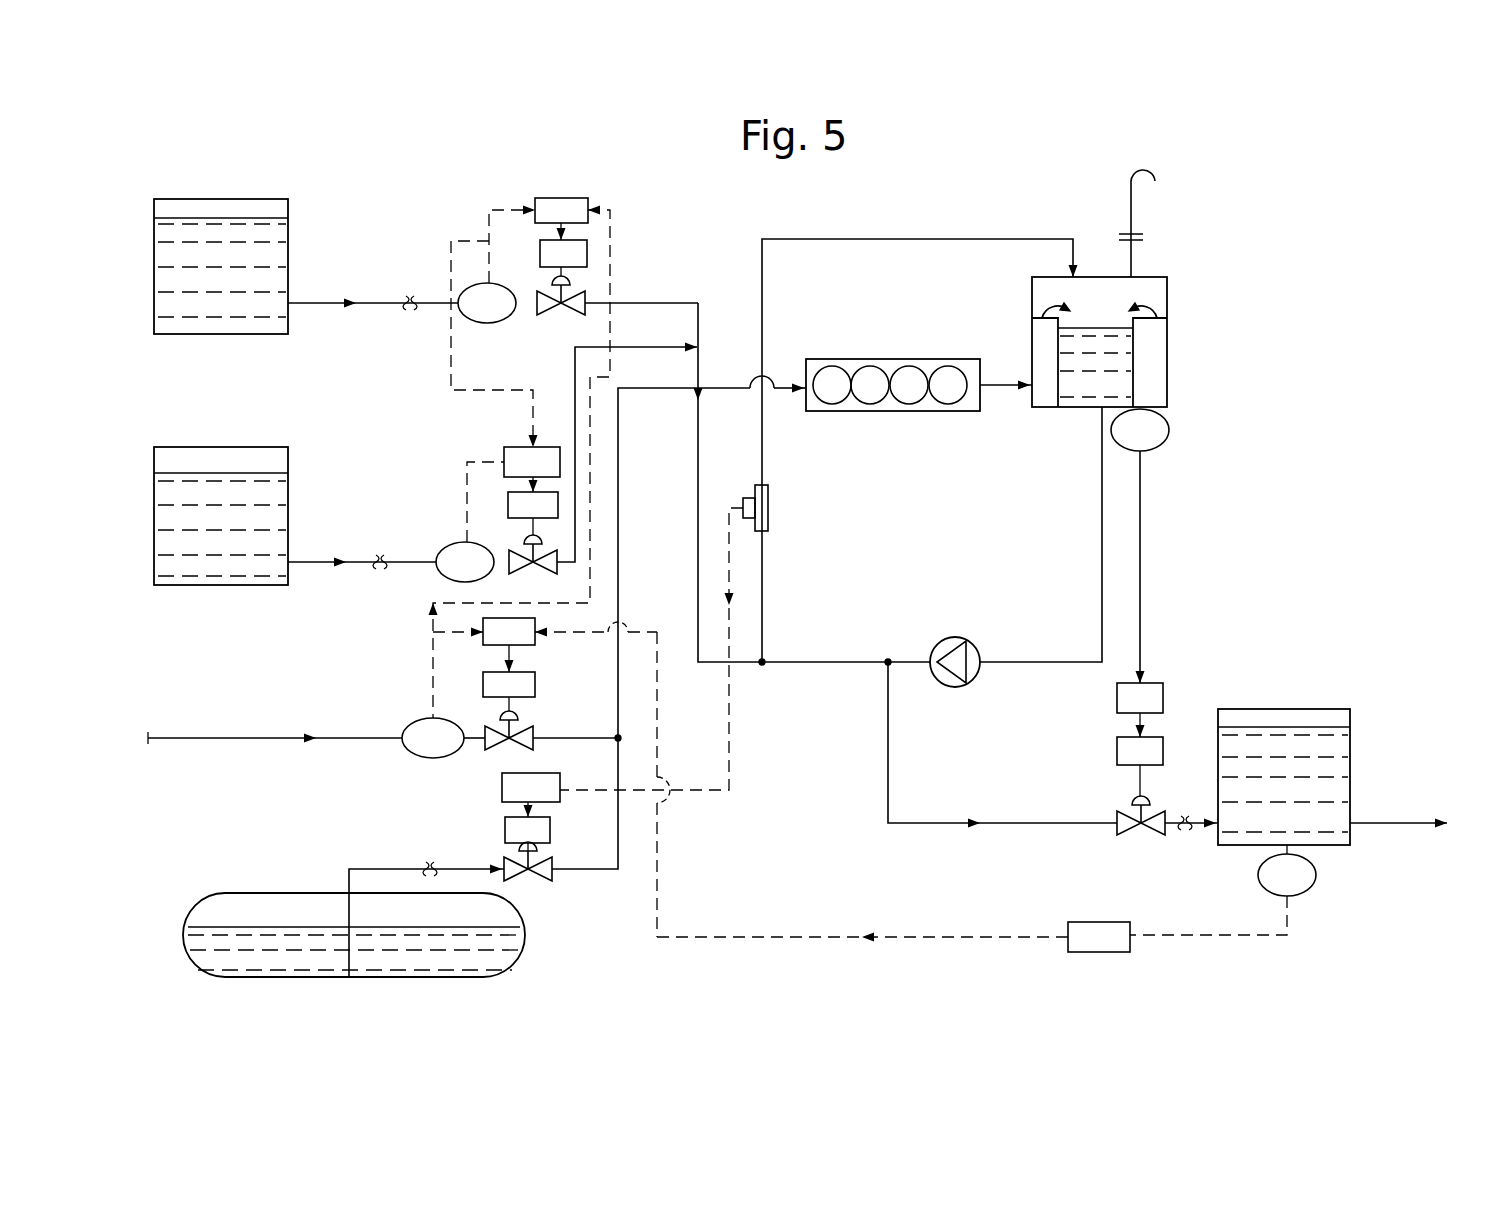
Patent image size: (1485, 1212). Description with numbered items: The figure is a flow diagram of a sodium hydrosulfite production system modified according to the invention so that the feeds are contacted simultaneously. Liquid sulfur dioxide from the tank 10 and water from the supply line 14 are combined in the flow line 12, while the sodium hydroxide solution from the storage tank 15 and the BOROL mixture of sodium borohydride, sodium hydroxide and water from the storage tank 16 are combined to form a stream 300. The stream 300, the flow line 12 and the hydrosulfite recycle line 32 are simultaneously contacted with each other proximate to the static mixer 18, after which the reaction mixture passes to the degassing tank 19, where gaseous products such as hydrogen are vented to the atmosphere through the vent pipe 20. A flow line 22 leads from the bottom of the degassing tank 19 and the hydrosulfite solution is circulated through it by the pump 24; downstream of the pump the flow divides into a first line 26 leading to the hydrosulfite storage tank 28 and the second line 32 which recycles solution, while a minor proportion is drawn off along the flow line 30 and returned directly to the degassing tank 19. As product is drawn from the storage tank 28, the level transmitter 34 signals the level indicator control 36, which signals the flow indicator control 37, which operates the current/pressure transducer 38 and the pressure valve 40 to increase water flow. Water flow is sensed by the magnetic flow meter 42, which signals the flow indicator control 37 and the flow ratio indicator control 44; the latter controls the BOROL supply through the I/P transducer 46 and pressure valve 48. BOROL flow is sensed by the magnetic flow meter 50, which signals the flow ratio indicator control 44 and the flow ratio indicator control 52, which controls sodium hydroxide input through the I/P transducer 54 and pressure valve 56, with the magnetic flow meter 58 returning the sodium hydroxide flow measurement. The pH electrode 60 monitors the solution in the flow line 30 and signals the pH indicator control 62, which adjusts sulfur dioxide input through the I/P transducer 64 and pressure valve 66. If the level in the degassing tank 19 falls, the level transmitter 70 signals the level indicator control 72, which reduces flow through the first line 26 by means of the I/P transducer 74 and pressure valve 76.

The tank 10 is at (522, 960).
The flow line 12 is at (618, 843).
The supply line 14 is at (268, 740).
The storage tank 15 is at (288, 510).
The storage tank 16 is at (288, 262).
The static mixer 18 is at (900, 411).
The degassing tank 19 is at (1167, 345).
The vent pipe 20 is at (1133, 207).
The flow line 22 is at (1100, 551).
The pump 24 is at (948, 637).
The first line 26 is at (997, 823).
The hydrosulfite storage tank 28 is at (1270, 727).
The flow line 30 is at (762, 617).
The second line 32 is at (698, 595).
The level transmitter 34 is at (1306, 890).
The level indicator control 36 is at (1122, 952).
The flow indicator control 37 is at (490, 645).
The current/pressure transducer 38 is at (535, 683).
The pressure valve 40 is at (530, 748).
The magnetic flow meter 42 is at (414, 754).
The flow ratio indicator control 44 is at (535, 198).
The I/P transducer 46 is at (540, 253).
The pressure valve 48 is at (547, 310).
The magnetic flow meter 50 is at (494, 323).
The flow ratio indicator control 52 is at (524, 447).
The I/P transducer 54 is at (508, 508).
The pressure valve 56 is at (518, 570).
The magnetic flow meter 58 is at (458, 542).
The pH electrode 60 is at (687, 637).
The pH indicator control 62 is at (502, 789).
The I/P transducer 64 is at (550, 830).
The pressure valve 66 is at (540, 877).
The level transmitter 70 is at (1163, 443).
The level indicator control 72 is at (1152, 683).
The I/P transducer 74 is at (1117, 750).
The pressure valve 76 is at (1128, 833).
The stream 300 is at (695, 277).